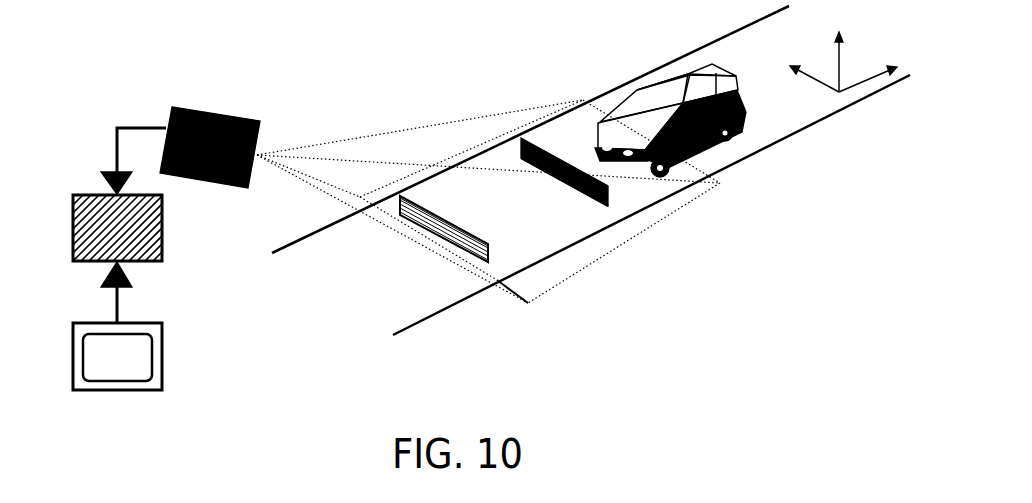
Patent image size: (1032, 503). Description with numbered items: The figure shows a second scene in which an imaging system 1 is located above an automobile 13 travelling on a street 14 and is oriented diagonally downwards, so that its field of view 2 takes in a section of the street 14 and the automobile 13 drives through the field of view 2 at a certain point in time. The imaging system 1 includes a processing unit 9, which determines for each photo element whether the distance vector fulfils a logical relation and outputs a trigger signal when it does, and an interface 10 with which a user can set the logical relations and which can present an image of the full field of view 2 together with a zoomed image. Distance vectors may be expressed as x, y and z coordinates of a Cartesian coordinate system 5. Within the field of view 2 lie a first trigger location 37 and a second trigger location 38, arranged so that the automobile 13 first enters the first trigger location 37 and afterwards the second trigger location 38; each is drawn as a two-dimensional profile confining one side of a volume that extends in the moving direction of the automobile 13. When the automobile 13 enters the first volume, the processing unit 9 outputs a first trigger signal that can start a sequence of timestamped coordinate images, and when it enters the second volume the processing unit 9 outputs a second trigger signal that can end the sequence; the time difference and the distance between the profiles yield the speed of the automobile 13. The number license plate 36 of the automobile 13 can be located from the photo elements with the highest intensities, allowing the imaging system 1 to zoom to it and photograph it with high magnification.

The imaging system 1 is at (119, 25).
The field of view 2 is at (396, 133).
The Cartesian coordinate system 5 is at (859, 76).
The processing unit 9 is at (73, 231).
The interface 10 is at (73, 360).
The automobile 13 is at (675, 72).
The street 14 is at (291, 243).
The number license plate 36 is at (594, 147).
The first trigger location 37 is at (580, 192).
The second trigger location 38 is at (475, 232).